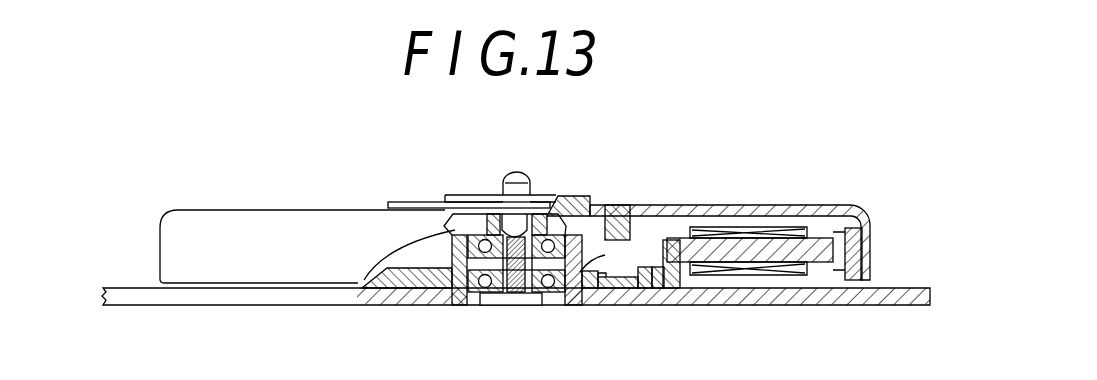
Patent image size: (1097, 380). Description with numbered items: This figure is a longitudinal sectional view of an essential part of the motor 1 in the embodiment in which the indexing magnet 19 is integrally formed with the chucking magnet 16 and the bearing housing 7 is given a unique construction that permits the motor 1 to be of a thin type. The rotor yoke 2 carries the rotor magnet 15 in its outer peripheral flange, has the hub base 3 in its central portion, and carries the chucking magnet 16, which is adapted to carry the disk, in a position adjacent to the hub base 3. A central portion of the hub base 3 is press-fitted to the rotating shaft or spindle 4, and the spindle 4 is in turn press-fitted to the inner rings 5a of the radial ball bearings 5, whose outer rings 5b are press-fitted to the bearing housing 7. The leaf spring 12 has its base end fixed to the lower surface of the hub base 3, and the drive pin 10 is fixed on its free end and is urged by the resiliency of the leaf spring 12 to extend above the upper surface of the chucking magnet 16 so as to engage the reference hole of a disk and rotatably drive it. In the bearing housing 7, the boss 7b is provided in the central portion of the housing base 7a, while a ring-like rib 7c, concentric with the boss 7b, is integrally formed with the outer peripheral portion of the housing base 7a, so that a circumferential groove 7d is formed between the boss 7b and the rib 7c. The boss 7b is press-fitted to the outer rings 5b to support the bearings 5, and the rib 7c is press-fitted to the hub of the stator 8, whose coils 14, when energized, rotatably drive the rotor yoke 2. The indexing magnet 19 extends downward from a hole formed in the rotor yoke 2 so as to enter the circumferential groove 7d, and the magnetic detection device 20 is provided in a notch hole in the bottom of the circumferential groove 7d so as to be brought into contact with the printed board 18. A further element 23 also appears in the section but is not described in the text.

The motor 1 is at (252, 207).
The rotor yoke 2 is at (793, 206).
The hub base 3 is at (448, 195).
The spindle 4 is at (522, 173).
The radial ball bearings 5 is at (488, 299).
The inner rings 5a is at (498, 295).
The outer rings 5b is at (472, 300).
The bearing housing 7 is at (426, 254).
The housing base 7a is at (405, 305).
The boss 7b is at (453, 249).
The ring-like rib 7c is at (664, 289).
The circumferential groove 7d is at (578, 305).
The stator 8 is at (818, 232).
The drive pin 10 is at (512, 183).
The leaf spring 12 is at (483, 200).
The coils 14 is at (740, 230).
The rotor magnet 15 is at (861, 256).
The chucking magnet 16 is at (613, 197).
The printed board 18 is at (823, 299).
The indexing magnet 19 is at (641, 230).
The magnetic detection device 20 is at (621, 289).
The spacer 23 is at (633, 289).